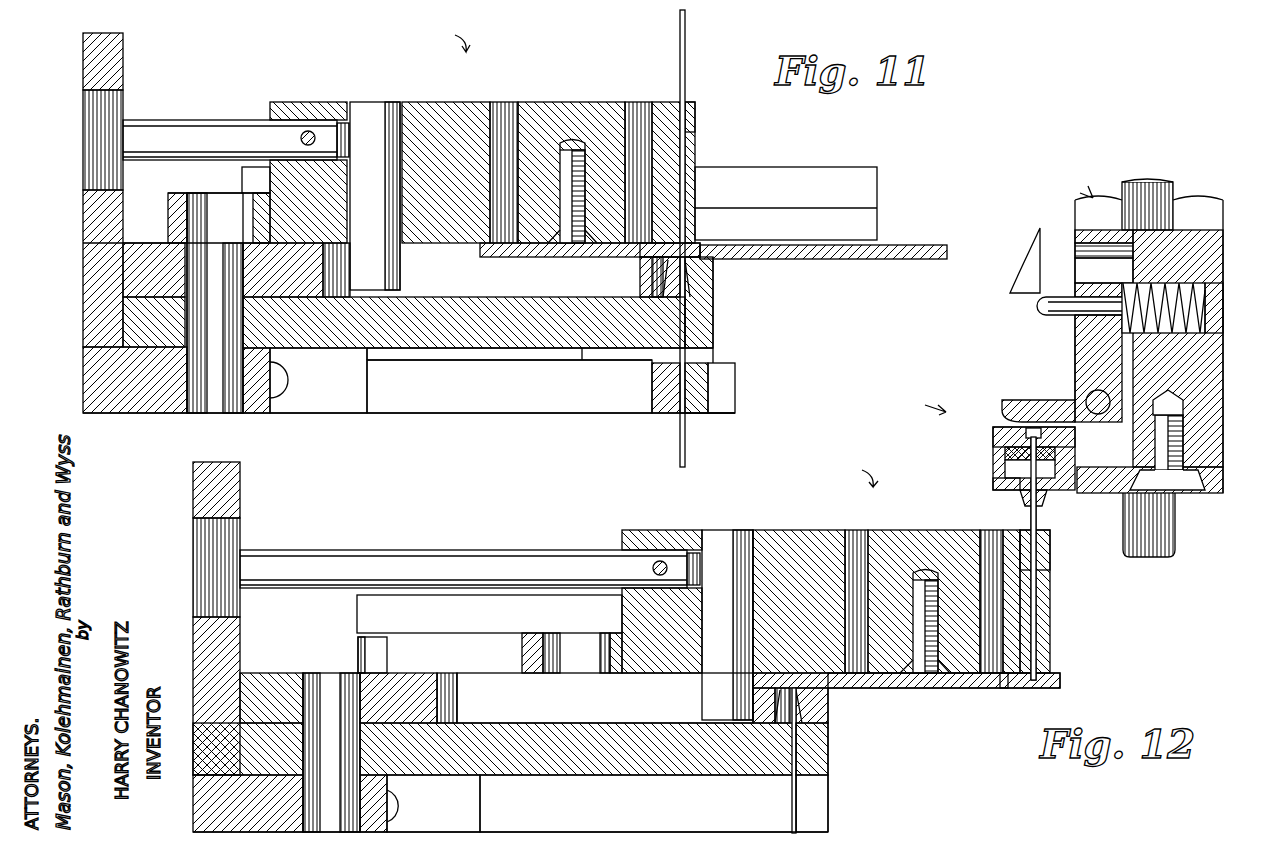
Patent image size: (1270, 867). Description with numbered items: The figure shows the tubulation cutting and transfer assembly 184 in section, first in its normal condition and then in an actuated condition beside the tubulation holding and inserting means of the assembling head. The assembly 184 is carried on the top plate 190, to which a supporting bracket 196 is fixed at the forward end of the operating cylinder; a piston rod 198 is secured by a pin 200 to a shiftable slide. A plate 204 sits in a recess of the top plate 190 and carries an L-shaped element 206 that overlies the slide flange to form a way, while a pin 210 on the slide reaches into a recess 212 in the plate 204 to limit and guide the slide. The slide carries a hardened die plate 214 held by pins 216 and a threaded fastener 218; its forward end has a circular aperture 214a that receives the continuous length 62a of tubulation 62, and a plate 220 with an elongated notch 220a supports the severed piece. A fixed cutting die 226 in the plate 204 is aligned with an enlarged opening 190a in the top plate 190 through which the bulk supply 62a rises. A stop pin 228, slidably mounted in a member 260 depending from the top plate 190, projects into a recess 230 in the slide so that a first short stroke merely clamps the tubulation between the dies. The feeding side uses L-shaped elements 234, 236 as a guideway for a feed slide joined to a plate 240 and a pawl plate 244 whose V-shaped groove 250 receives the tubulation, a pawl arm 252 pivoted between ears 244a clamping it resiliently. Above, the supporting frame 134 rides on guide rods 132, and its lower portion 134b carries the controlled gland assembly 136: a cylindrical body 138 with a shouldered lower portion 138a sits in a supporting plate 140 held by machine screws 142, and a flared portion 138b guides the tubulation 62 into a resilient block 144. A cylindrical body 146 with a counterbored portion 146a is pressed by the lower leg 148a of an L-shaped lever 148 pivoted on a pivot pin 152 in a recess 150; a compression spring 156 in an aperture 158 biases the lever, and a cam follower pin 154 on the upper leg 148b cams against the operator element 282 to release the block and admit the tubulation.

In FIG. 12, the tubulation 62 is at (1037, 522).
In FIG. 11, the bulk supply of tubulation 62a is at (686, 447).
In FIG. 12, the bulk supply of tubulation 62a is at (797, 820).
In FIG. 12, the guide rods 132 is at (1165, 183).
In FIG. 12, the supporting frame 134 is at (1093, 198).
In FIG. 12, the lower portion of supporting frame 134b is at (1222, 233).
In FIG. 12, the controlled gland assembly 136 is at (980, 441).
In FIG. 12, the cylindrical body 138 is at (997, 475).
In FIG. 12, the shouldered lower portion 138a is at (1000, 490).
In FIG. 12, the flared portion 138b is at (1030, 507).
In FIG. 12, the supporting plate 140 is at (1228, 476).
In FIG. 12, the machine screws 142 is at (1180, 446).
In FIG. 12, the resilient block 144 is at (1000, 455).
In FIG. 12, the cylindrical body 146 is at (995, 440).
In FIG. 12, the counterbored portion 146a is at (1030, 428).
In FIG. 12, the L-shaped lever 148 is at (1078, 332).
In FIG. 12, the lower leg 148a is at (1030, 413).
In FIG. 12, the upper leg 148b is at (1085, 285).
In FIG. 12, the recess 150 is at (1076, 250).
In FIG. 12, the pivot pin 152 is at (1092, 393).
In FIG. 12, the cam follower pin 154 is at (1036, 305).
In FIG. 12, the compression spring 156 is at (1206, 300).
In FIG. 12, the aperture 158 is at (1200, 336).
In FIG. 11, the tubulation cutting and transfer assembly 184 is at (451, 34).
In FIG. 12, the tubulation cutting and transfer assembly 184 is at (858, 470).
In FIG. 11, the top plate 190 is at (122, 326).
In FIG. 12, the top plate 190 is at (580, 766).
In FIG. 11, the enlarged opening 190a is at (687, 324).
In FIG. 12, the enlarged opening 190a is at (798, 765).
In FIG. 11, the supporting bracket 196 is at (93, 36).
In FIG. 12, the supporting bracket 196 is at (236, 480).
In FIG. 11, the piston rod 198 is at (157, 128).
In FIG. 12, the piston rod 198 is at (293, 555).
In FIG. 11, the pin 200 is at (312, 131).
In FIG. 12, the pin 200 is at (661, 561).
In FIG. 11, the plate 204 is at (925, 226).
In FIG. 12, the plate 204 is at (900, 690).
In FIG. 11, the L-shaped element 206 is at (773, 175).
In FIG. 11, the pin 210 is at (377, 110).
In FIG. 12, the pin 210 is at (727, 533).
In FIG. 11, the recess 212 is at (322, 300).
In FIG. 12, the recess 212 is at (456, 678).
In FIG. 11, the die plate 214 is at (533, 251).
In FIG. 12, the die plate 214 is at (958, 690).
In FIG. 11, the circular aperture 214a is at (700, 246).
In FIG. 12, the circular aperture 214a is at (1060, 680).
In FIG. 11, the pins 216 is at (640, 108).
In FIG. 12, the pins 216 is at (983, 672).
In FIG. 11, the threaded fastener 218 is at (572, 148).
In FIG. 12, the threaded fastener 218 is at (922, 578).
In FIG. 11, the plate 220 is at (690, 101).
In FIG. 12, the plate 220 is at (1050, 602).
In FIG. 11, the elongated notch 220a is at (691, 128).
In FIG. 12, the elongated notch 220a is at (1038, 581).
In FIG. 11, the fixed cutting die 226 is at (699, 276).
In FIG. 12, the fixed cutting die 226 is at (813, 706).
In FIG. 11, the stop pin 228 is at (208, 404).
In FIG. 12, the stop pin 228 is at (325, 690).
In FIG. 11, the recess 230 is at (202, 195).
In FIG. 12, the recess 230 is at (555, 626).
In FIG. 11, the L-shaped element 234 is at (712, 358).
In FIG. 12, the L-shaped element 234 is at (821, 796).
In FIG. 11, the L-shaped element 236 is at (339, 406).
In FIG. 12, the L-shaped element 236 is at (470, 811).
In FIG. 11, the plate 240 is at (450, 405).
In FIG. 11, the plate 244 is at (650, 388).
In FIG. 11, the upstanding ears 244a is at (730, 388).
In FIG. 11, the V-shaped groove 250 is at (680, 407).
In FIG. 11, the pawl arm 252 is at (700, 408).
In FIG. 11, the member 260 is at (92, 386).
In FIG. 12, the member 260 is at (386, 806).
In FIG. 12, the operator element 282 is at (1020, 262).